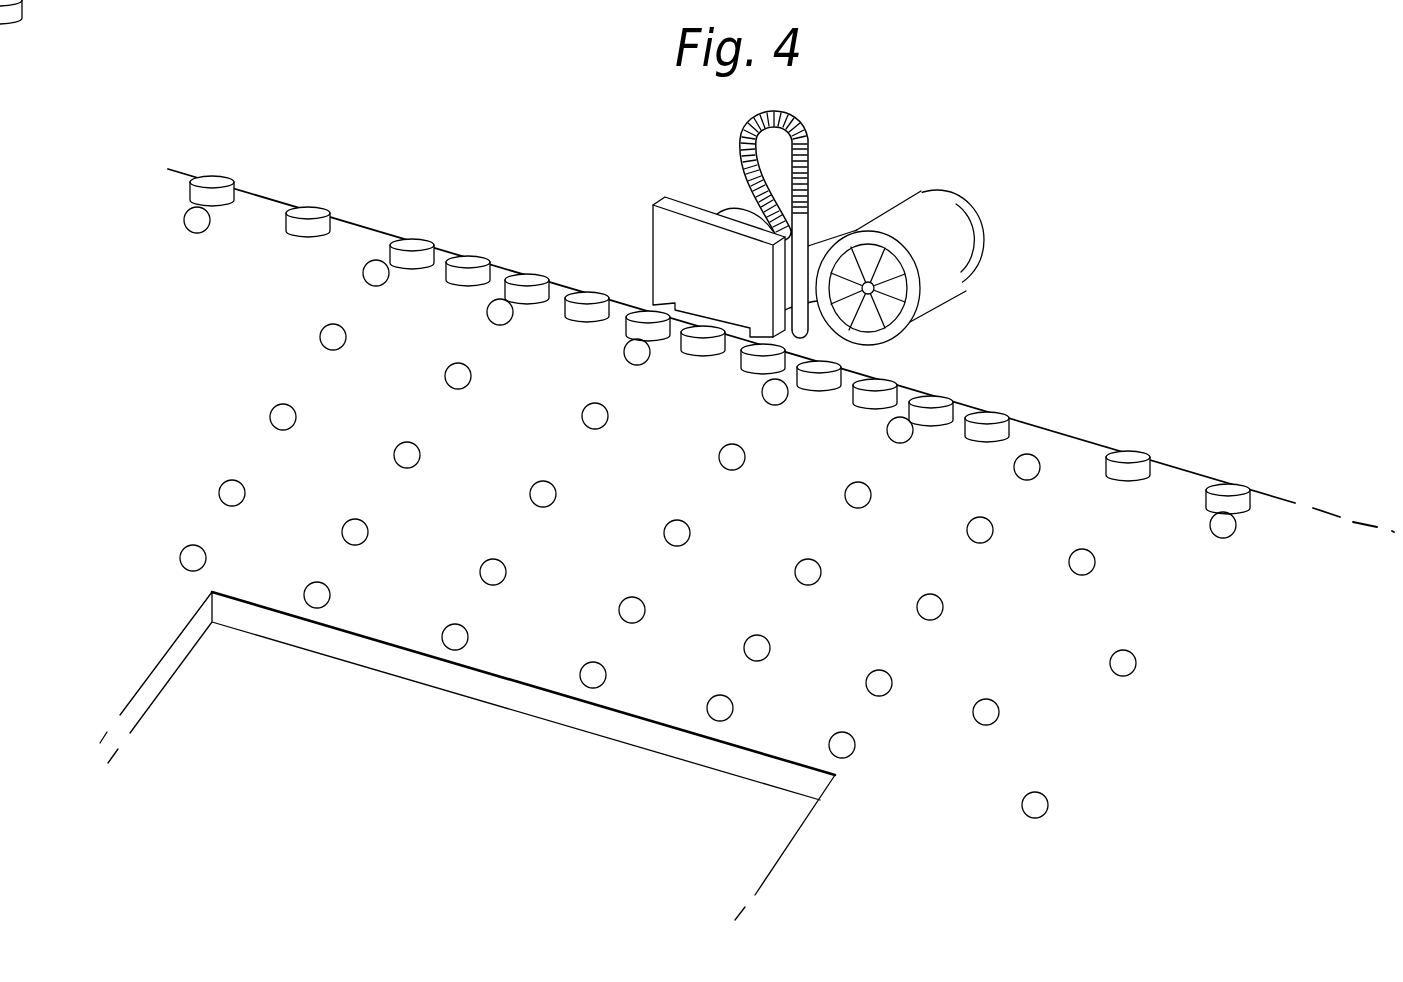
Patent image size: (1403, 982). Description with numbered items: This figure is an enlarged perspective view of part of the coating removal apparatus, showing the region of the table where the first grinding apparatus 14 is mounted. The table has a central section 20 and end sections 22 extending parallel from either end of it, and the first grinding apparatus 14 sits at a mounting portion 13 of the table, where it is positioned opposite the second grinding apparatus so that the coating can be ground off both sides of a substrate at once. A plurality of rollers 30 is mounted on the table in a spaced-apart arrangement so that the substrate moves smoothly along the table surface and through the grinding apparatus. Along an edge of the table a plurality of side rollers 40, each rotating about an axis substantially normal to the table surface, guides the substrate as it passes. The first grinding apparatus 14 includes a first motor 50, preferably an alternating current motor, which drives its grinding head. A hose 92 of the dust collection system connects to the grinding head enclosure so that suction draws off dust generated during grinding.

The mounting portion 13 is at (697, 266).
The first grinding apparatus 14 is at (663, 240).
The central section 20 is at (672, 690).
The end sections 22 is at (257, 217).
The rollers 30 is at (592, 676).
The side rollers 40 is at (412, 243).
The first motor 50 is at (968, 240).
The hose 92 is at (797, 122).